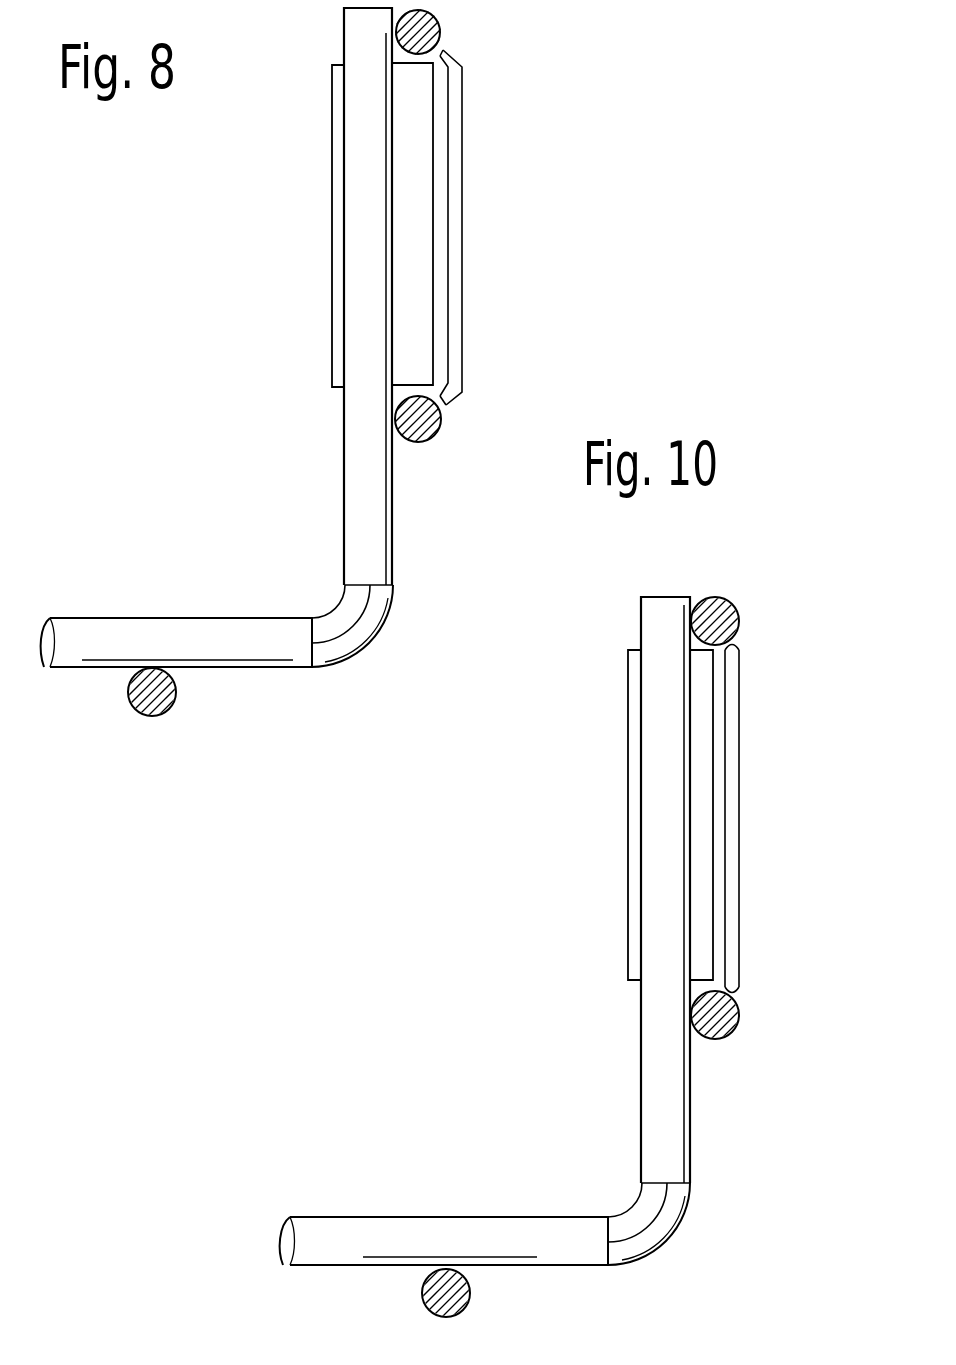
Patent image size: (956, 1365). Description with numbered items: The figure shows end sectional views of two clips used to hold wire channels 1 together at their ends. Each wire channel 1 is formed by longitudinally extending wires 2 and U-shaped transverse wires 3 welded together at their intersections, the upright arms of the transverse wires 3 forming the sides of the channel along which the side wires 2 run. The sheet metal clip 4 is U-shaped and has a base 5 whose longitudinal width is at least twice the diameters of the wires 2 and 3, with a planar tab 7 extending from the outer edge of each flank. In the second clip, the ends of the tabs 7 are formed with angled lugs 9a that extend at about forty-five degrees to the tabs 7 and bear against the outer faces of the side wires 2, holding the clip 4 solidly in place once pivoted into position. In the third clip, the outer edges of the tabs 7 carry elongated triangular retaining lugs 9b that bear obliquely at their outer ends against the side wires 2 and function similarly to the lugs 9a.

In FIG. 8, the wire channel 1 is at (248, 762).
In FIG. 10, the wire channel 1 is at (353, 1230).
In FIG. 8, the longitudinally extending wire 2 is at (422, 28).
In FIG. 10, the longitudinally extending wire 2 is at (733, 612).
In FIG. 8, the transverse wire 3 is at (363, 450).
In FIG. 10, the transverse wire 3 is at (663, 1100).
In FIG. 8, the clip 4 is at (410, 243).
In FIG. 10, the clip 4 is at (700, 887).
In FIG. 8, the base 5 is at (337, 172).
In FIG. 10, the base 5 is at (632, 800).
In FIG. 8, the tab 7 is at (453, 207).
In FIG. 10, the tab 7 is at (735, 813).
In FIG. 8, the angled lug 9a is at (445, 50).
In FIG. 10, the triangular retaining lug 9b is at (737, 647).